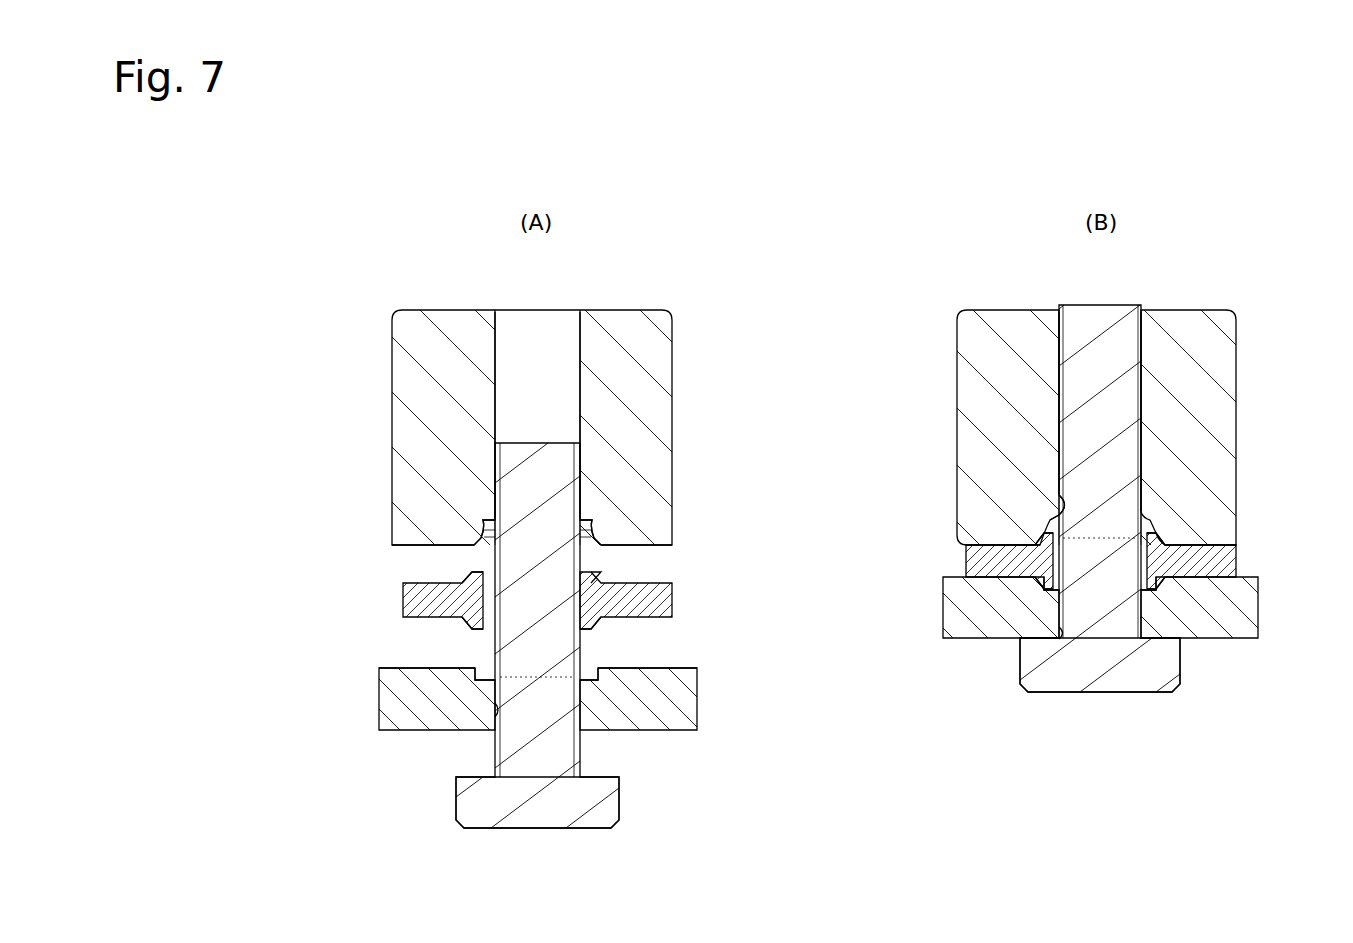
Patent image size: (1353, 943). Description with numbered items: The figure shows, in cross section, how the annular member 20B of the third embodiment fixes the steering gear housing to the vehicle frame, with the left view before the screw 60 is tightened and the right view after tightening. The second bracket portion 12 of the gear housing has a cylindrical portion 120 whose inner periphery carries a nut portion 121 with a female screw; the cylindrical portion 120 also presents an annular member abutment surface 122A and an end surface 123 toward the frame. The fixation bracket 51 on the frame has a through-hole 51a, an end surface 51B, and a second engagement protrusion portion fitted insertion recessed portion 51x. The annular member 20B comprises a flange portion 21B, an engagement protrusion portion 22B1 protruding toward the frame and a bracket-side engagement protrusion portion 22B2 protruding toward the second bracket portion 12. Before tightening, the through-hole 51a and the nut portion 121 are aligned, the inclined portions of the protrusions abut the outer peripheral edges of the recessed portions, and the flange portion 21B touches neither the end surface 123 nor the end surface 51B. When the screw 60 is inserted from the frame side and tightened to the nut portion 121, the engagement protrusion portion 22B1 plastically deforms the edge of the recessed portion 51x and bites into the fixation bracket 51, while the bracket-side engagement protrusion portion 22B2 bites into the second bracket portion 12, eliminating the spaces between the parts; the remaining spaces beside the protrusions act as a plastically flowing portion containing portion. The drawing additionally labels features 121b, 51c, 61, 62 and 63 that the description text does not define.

The second bracket portion 12 is at (779, 397).
The cylindrical portion 120 is at (428, 325).
The nut portion 121 is at (578, 330).
The bore bottom lip 121b is at (1063, 512).
The annular member abutment surface 122A is at (480, 528).
The end surface 123 is at (412, 549).
The annular member 20B is at (834, 563).
The flange portion 21B is at (672, 597).
The engagement protrusion portion 22B1 is at (472, 623).
The bracket-side engagement protrusion portion 22B2 is at (475, 573).
The fixation bracket 51 is at (826, 653).
The through-hole 51a is at (498, 705).
The end surface 51B is at (407, 665).
The recess of plate 51c is at (1043, 612).
The second engagement protrusion portion fitted insertion recessed portion 51x is at (593, 673).
The screw 60 is at (873, 613).
The bolt head 61 is at (542, 829).
The bolt shaft 62 is at (580, 755).
The shaft insertion portion 63 is at (577, 478).